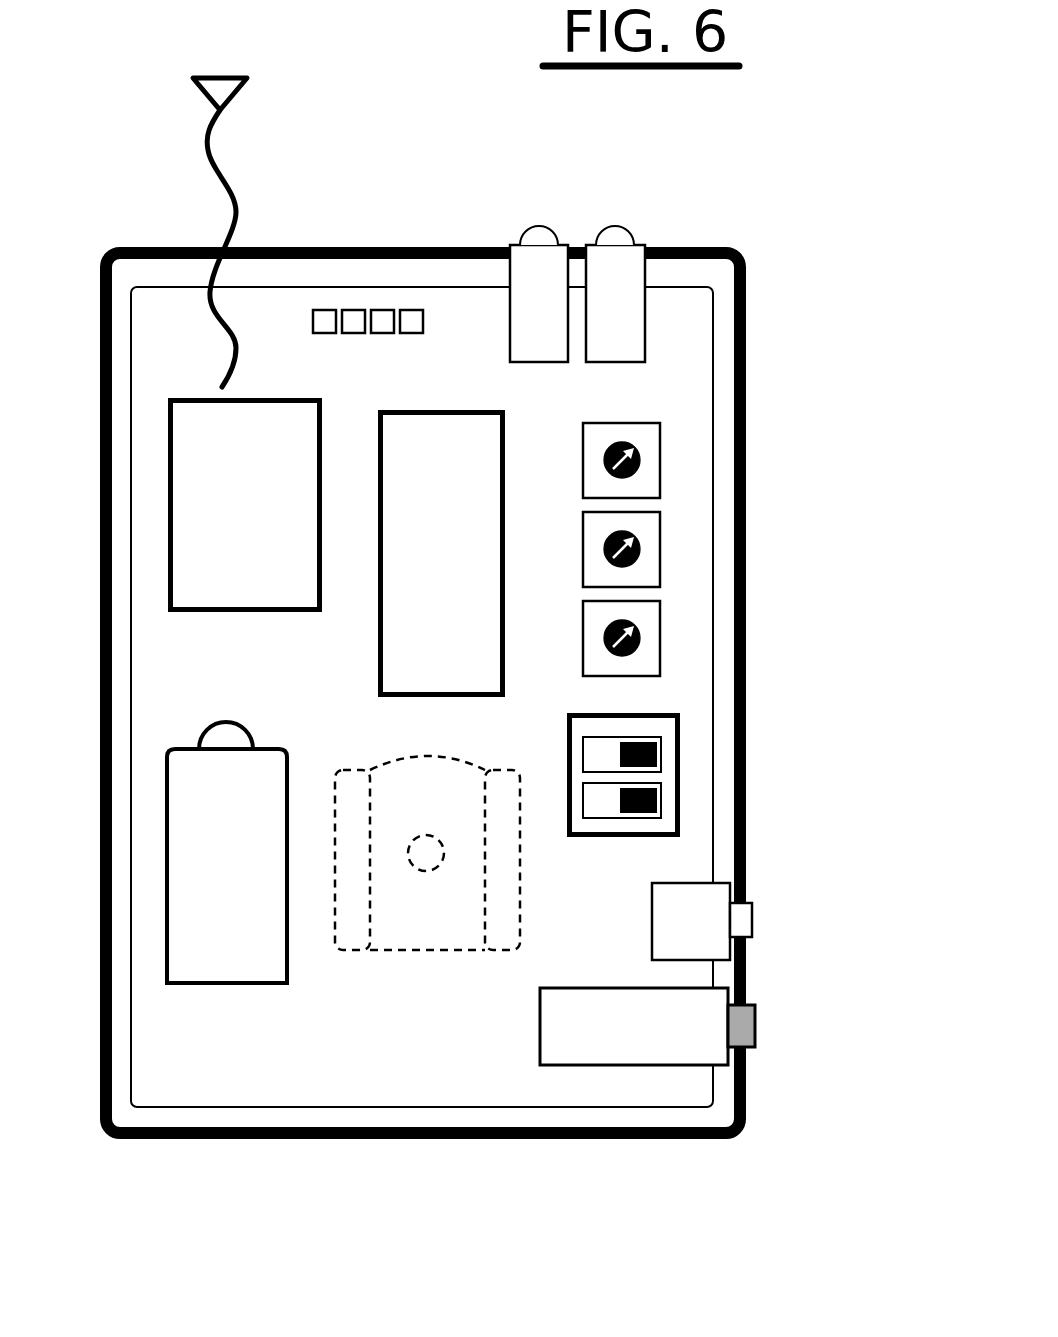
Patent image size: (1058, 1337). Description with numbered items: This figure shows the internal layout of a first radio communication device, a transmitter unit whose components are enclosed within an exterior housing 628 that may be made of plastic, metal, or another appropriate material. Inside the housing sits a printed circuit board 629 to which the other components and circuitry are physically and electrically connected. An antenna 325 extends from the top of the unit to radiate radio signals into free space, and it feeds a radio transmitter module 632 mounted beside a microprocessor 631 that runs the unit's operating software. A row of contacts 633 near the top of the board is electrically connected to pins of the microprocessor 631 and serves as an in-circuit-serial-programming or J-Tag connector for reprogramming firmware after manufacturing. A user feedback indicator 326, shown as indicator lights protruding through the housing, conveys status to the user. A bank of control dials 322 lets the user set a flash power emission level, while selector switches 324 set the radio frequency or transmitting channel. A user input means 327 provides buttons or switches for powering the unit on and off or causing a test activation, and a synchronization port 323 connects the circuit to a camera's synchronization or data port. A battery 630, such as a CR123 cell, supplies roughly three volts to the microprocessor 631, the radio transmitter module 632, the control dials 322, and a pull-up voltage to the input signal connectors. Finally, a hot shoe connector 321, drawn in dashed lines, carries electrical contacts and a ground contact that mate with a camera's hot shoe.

The exterior housing 628 is at (752, 355).
The printed circuit board 629 is at (332, 1043).
The antenna 325 is at (199, 232).
The contacts 633 is at (369, 302).
The user feedback indicator 326 is at (577, 278).
The radio transmitter module 632 is at (194, 436).
The microprocessor (MCU) 631 is at (360, 665).
The dials 322 is at (668, 465).
The selector switches 324 is at (692, 750).
The user input means 327 is at (733, 921).
The synchronization port 323 is at (677, 1026).
The battery 630 is at (151, 788).
The hot shoe connector 321 is at (425, 920).